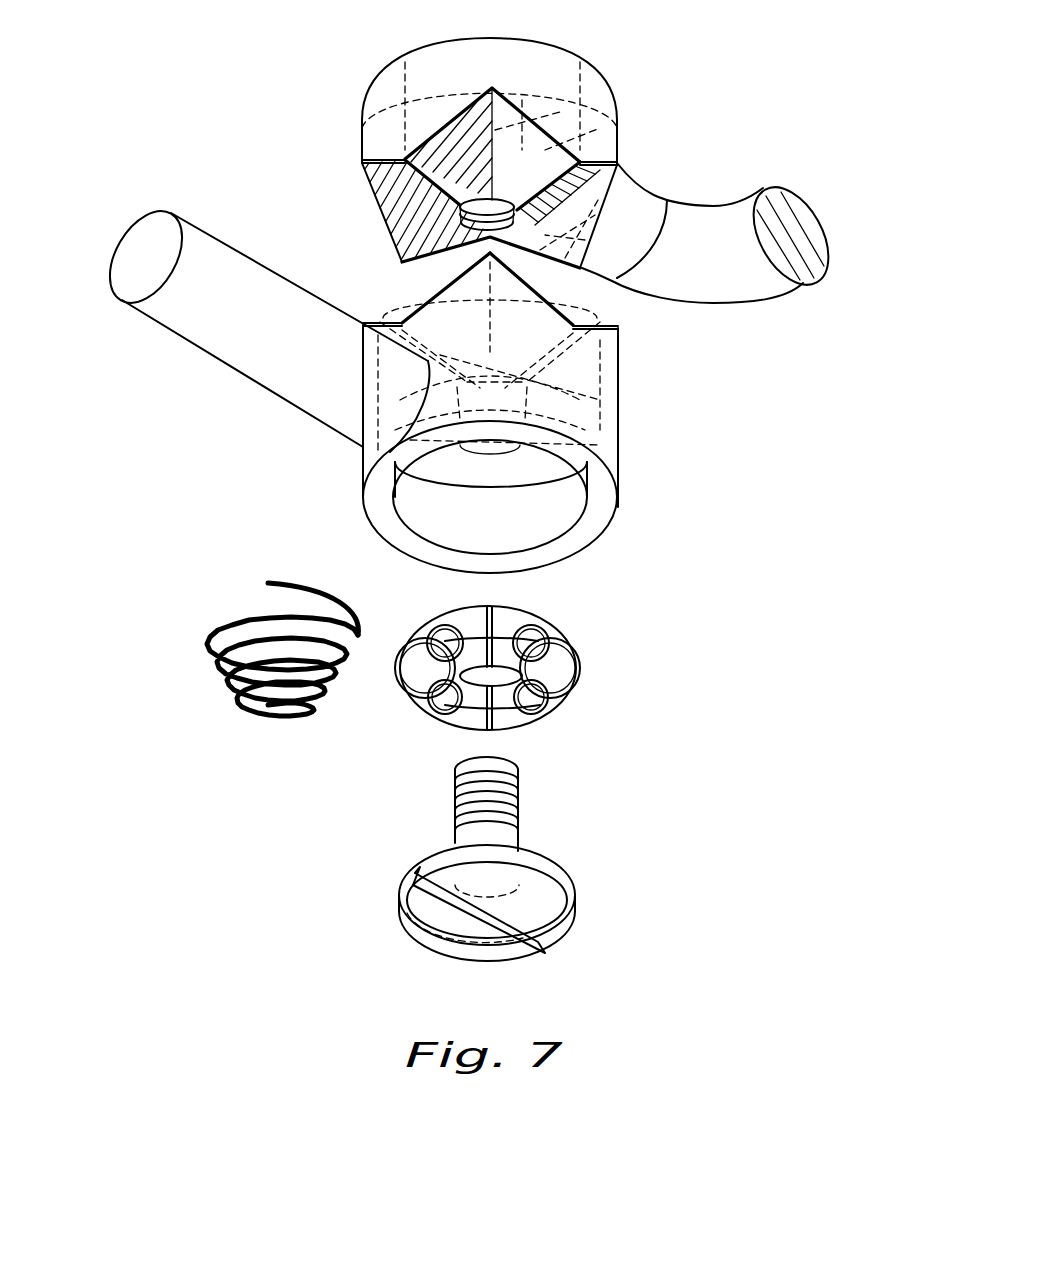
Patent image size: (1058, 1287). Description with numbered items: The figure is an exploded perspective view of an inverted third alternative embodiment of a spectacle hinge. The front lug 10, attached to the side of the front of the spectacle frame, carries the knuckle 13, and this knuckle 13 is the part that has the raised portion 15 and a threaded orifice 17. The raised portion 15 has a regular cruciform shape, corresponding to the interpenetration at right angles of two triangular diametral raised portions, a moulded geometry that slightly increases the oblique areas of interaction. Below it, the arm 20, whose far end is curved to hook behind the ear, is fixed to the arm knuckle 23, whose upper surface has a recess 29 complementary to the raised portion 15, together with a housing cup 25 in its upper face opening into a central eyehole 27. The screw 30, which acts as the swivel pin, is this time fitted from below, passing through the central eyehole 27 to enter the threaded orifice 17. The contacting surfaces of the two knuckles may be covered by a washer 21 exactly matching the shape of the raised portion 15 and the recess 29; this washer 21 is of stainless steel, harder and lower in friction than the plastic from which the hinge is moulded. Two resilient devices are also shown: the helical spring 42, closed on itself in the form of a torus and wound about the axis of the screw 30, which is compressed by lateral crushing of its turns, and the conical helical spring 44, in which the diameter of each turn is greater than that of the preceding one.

The front lug 10 is at (718, 237).
The knuckle 13 is at (430, 77).
The raised portion 15 is at (403, 222).
The threaded orifice 17 is at (500, 198).
The arm 20 is at (210, 305).
The washer 21 is at (415, 297).
The arm knuckle 23 is at (642, 427).
The housing cup 25 is at (567, 502).
The central eyehole 27 is at (492, 457).
The recess 29 is at (567, 308).
The screw 30 is at (527, 822).
The helical spring 42 is at (547, 670).
The conical helical spring 44 is at (200, 638).